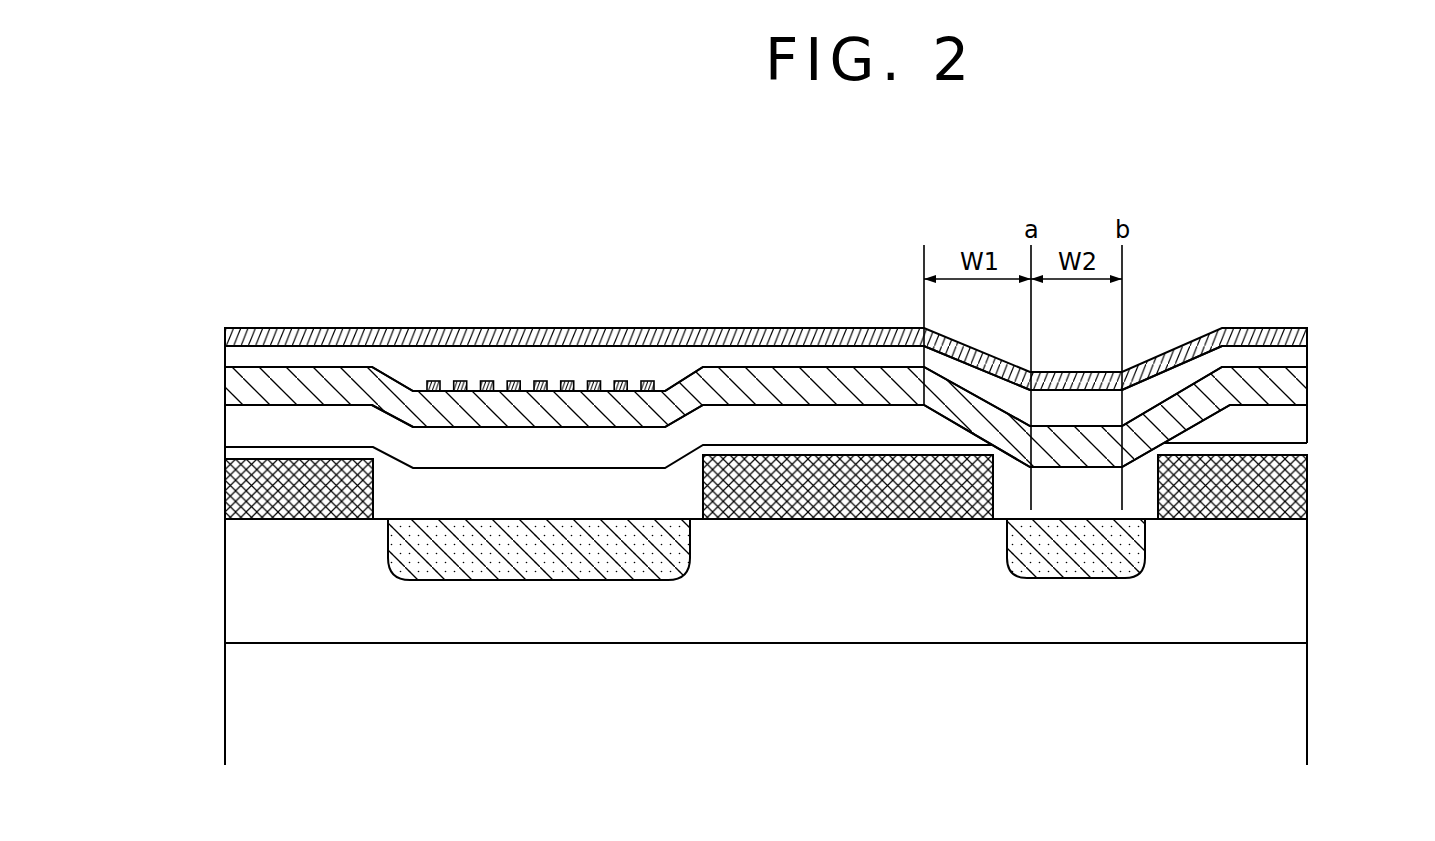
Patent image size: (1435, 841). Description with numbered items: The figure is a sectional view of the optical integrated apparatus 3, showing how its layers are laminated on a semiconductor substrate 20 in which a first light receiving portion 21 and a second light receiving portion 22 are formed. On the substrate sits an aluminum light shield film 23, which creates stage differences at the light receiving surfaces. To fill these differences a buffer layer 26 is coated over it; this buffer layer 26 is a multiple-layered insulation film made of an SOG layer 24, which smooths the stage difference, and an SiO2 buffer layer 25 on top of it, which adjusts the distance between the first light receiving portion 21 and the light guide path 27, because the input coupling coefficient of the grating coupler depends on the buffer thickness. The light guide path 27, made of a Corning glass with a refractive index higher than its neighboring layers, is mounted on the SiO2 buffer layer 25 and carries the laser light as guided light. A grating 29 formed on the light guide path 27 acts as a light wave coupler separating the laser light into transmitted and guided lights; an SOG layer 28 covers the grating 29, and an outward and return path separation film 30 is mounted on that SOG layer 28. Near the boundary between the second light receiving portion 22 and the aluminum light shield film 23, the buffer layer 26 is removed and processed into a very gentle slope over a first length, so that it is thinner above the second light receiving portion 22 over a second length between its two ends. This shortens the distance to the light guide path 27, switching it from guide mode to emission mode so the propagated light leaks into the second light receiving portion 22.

The optical integrated apparatus 3 is at (478, 248).
The semiconductor substrate 20 is at (1318, 519).
The first light receiving portion 21 is at (410, 559).
The second light receiving portion 22 is at (1120, 558).
The aluminum light shield film 23 is at (1296, 492).
The SOG layer 24 is at (238, 453).
The SiO2 buffer layer 25 is at (238, 417).
The buffer layer 26 is at (153, 400).
The light guide path 27 is at (1296, 386).
The SOG layer 28 is at (1296, 354).
The grating 29 is at (655, 368).
The outward and return path separation film 30 is at (877, 328).